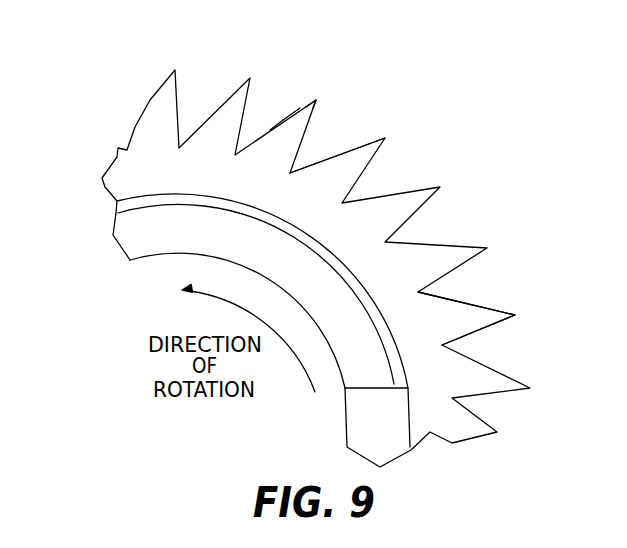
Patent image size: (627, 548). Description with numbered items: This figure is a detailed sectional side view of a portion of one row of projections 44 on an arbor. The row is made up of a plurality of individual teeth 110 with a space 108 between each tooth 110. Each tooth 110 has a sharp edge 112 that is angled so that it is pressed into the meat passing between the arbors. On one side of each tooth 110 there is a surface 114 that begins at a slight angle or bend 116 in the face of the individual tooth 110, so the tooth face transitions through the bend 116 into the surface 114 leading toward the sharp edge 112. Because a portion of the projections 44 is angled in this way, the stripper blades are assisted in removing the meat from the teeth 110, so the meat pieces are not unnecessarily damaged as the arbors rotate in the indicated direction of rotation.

The space 108 is at (392, 166).
The tooth 110 is at (508, 300).
The sharp edge 112 is at (316, 100).
The surface 114 is at (289, 117).
The bend 116 is at (283, 121).
The projections 44 is at (360, 140).